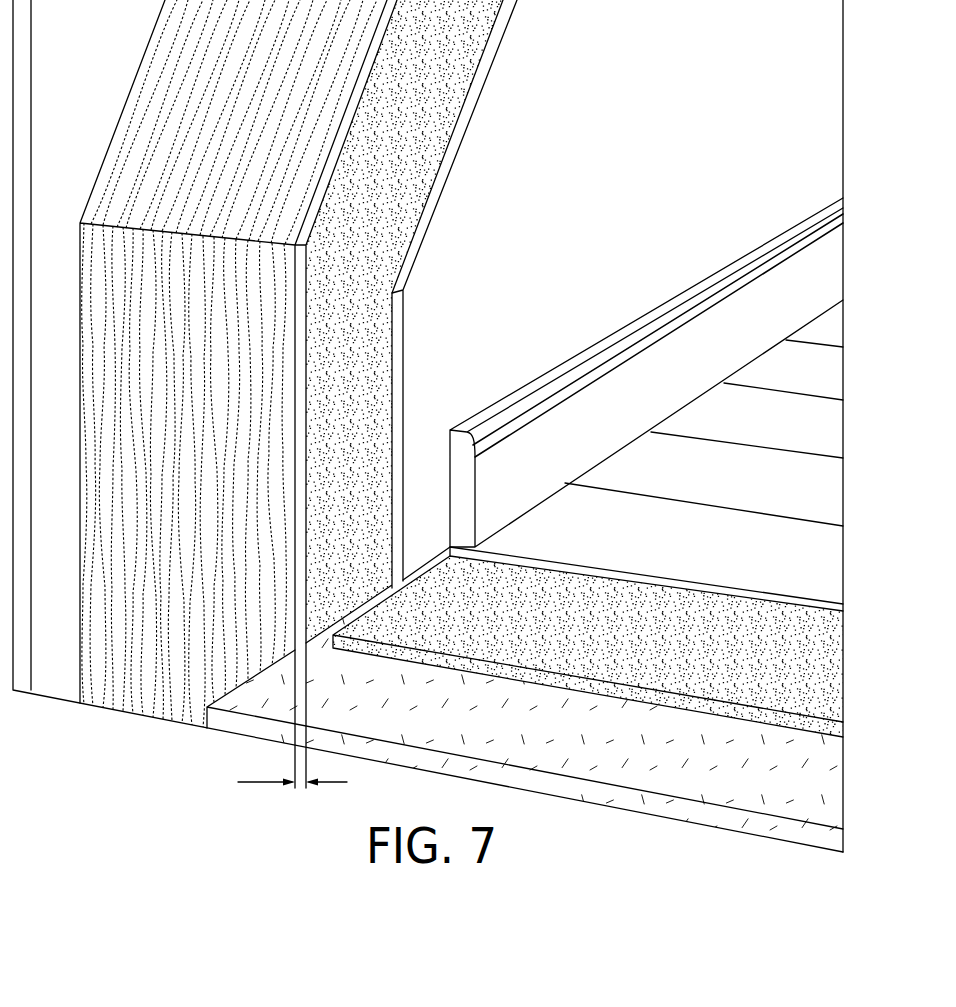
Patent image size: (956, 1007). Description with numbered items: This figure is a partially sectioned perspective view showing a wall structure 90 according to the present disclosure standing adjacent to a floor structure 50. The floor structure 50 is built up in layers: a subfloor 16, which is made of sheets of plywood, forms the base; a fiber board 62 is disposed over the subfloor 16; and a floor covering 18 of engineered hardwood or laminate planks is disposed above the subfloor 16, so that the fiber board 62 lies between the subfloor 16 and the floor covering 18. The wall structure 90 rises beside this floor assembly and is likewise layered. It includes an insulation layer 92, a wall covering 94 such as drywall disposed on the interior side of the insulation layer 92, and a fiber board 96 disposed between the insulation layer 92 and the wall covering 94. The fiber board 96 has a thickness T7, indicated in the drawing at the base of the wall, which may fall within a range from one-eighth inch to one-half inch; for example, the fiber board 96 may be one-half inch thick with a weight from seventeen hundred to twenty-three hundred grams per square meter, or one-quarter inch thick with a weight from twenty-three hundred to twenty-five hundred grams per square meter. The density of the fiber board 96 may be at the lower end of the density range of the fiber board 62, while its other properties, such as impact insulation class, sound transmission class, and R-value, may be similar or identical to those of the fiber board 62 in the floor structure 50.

The subfloor 16 is at (660, 780).
The floor covering 18 is at (812, 562).
The floor structure 50 is at (800, 504).
The fiber board 62 is at (815, 672).
The wall structure 90 is at (437, 378).
The insulation layer 92 is at (160, 697).
The wall covering 94 is at (483, 285).
The fiber board 96 is at (365, 352).
The thickness of the fiber board T7 is at (278, 781).